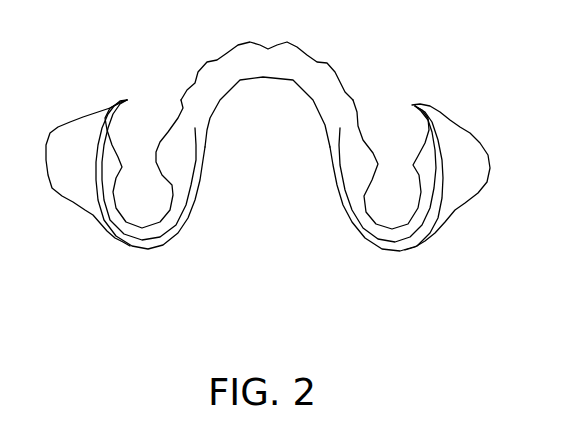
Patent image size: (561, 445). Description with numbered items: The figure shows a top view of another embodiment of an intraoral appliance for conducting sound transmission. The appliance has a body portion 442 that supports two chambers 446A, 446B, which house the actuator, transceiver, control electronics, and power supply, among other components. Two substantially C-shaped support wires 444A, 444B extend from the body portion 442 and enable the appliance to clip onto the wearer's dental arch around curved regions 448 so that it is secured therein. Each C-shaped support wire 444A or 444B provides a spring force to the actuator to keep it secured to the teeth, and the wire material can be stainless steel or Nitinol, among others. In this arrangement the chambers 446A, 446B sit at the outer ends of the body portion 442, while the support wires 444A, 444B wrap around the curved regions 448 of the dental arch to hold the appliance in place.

The body portion 442 is at (272, 62).
The C-shaped support wire 444A is at (122, 236).
The C-shaped support wire 444B is at (398, 238).
The chamber 446A is at (74, 137).
The chamber 446B is at (455, 132).
The curved regions 448 is at (368, 203).